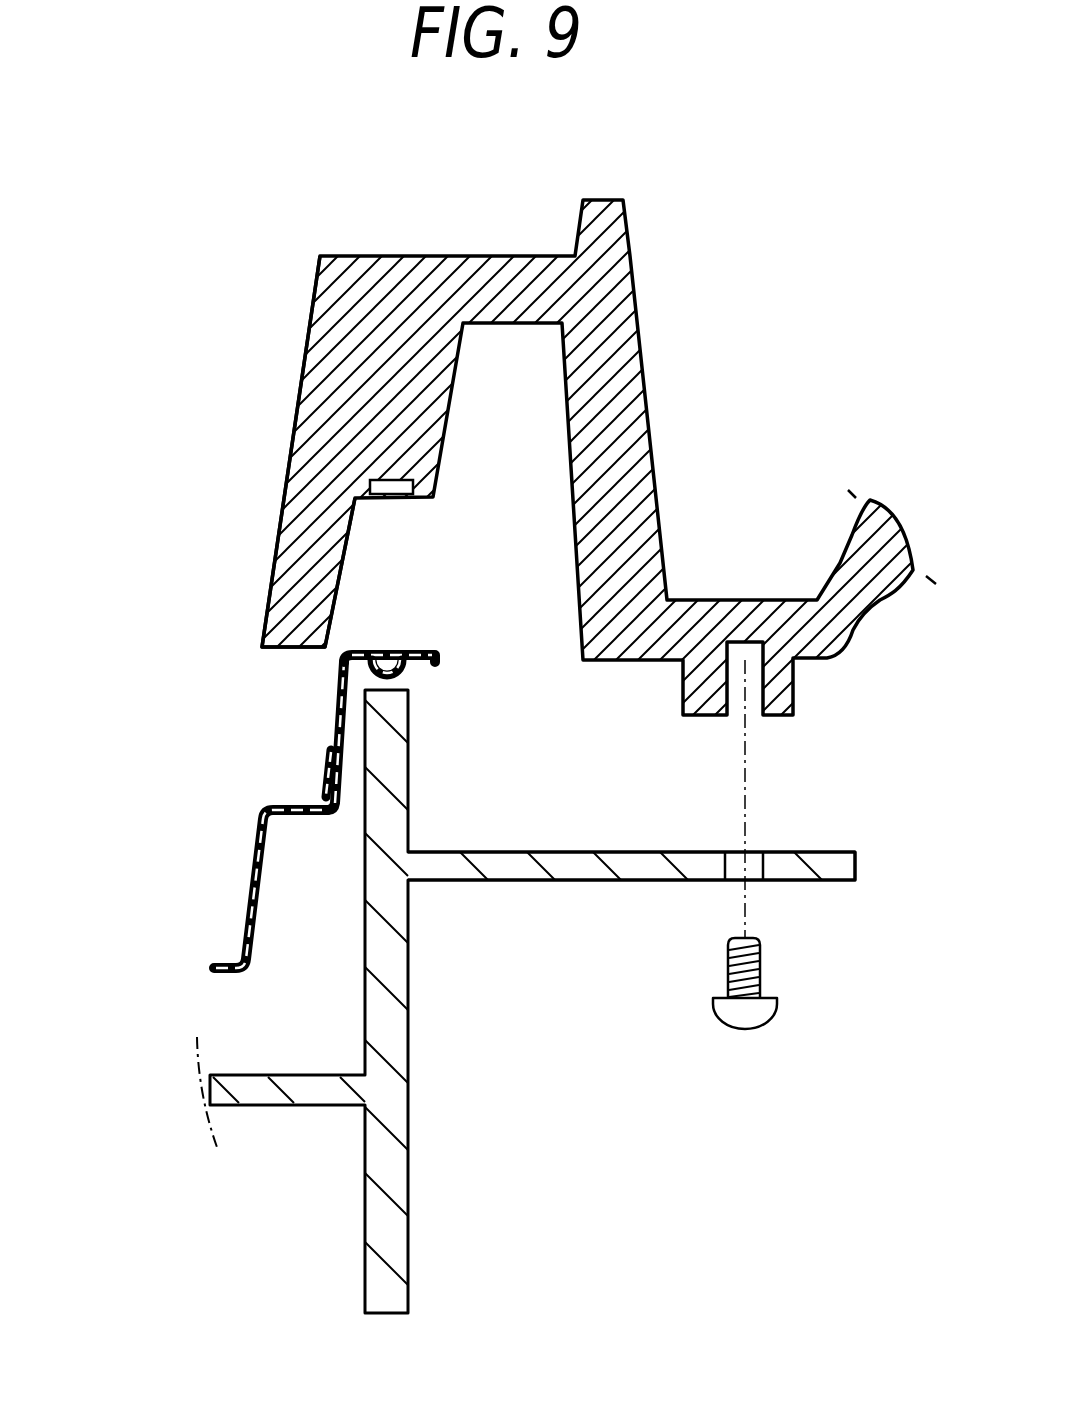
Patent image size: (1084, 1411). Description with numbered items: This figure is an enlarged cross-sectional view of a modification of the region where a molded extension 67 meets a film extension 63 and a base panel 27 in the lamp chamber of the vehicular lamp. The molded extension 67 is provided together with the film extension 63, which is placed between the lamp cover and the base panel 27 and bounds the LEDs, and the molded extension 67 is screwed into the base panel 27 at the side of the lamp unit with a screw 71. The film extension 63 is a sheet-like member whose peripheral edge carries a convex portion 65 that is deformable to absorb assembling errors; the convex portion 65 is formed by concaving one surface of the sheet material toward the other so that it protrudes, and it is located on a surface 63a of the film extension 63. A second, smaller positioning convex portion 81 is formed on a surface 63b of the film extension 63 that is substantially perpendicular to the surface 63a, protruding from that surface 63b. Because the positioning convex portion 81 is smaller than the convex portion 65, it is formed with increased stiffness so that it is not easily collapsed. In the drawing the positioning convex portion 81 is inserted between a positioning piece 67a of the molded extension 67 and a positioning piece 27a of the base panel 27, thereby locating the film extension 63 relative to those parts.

The molded extension 67 is at (272, 366).
The positioning piece 67a is at (307, 582).
The film extension 63 is at (228, 880).
The surface 63a is at (423, 655).
The surface 63b is at (340, 707).
The positioning convex portion 81 is at (323, 777).
The convex portion 65 is at (410, 670).
The base panel 27 is at (437, 1253).
The positioning piece 27a is at (390, 747).
The screw 71 is at (763, 1027).